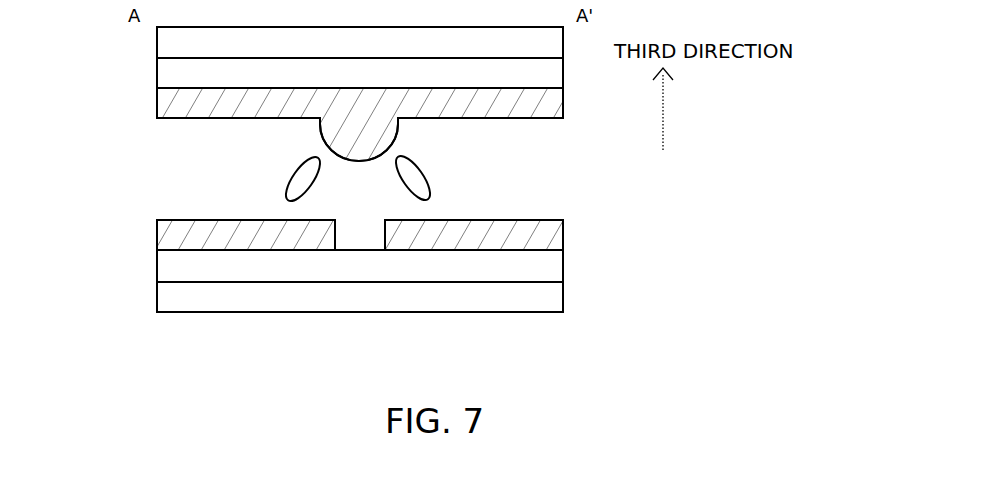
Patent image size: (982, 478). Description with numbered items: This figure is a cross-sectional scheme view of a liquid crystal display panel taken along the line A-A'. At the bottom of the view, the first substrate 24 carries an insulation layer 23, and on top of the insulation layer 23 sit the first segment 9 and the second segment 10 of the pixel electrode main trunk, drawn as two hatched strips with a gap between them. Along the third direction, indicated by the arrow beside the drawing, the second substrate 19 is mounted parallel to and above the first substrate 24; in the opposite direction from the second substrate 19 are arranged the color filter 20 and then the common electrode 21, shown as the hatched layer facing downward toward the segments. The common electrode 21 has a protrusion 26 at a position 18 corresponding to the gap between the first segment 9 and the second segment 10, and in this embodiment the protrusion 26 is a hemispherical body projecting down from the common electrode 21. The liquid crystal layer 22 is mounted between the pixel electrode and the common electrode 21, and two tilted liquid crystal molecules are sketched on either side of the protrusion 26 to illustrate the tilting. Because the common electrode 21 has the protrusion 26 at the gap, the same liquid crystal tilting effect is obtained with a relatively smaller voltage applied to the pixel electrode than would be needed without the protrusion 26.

The second substrate 19 is at (172, 43).
The color filter 20 is at (304, 78).
The common electrode 21 is at (304, 124).
The protrusion 26 is at (493, 144).
The liquid crystal layer 22 is at (356, 186).
The first segment 9 is at (190, 223).
The second segment 10 is at (526, 245).
The position 18 is at (326, 302).
The insulation layer 23 is at (304, 273).
The first substrate 24 is at (412, 301).